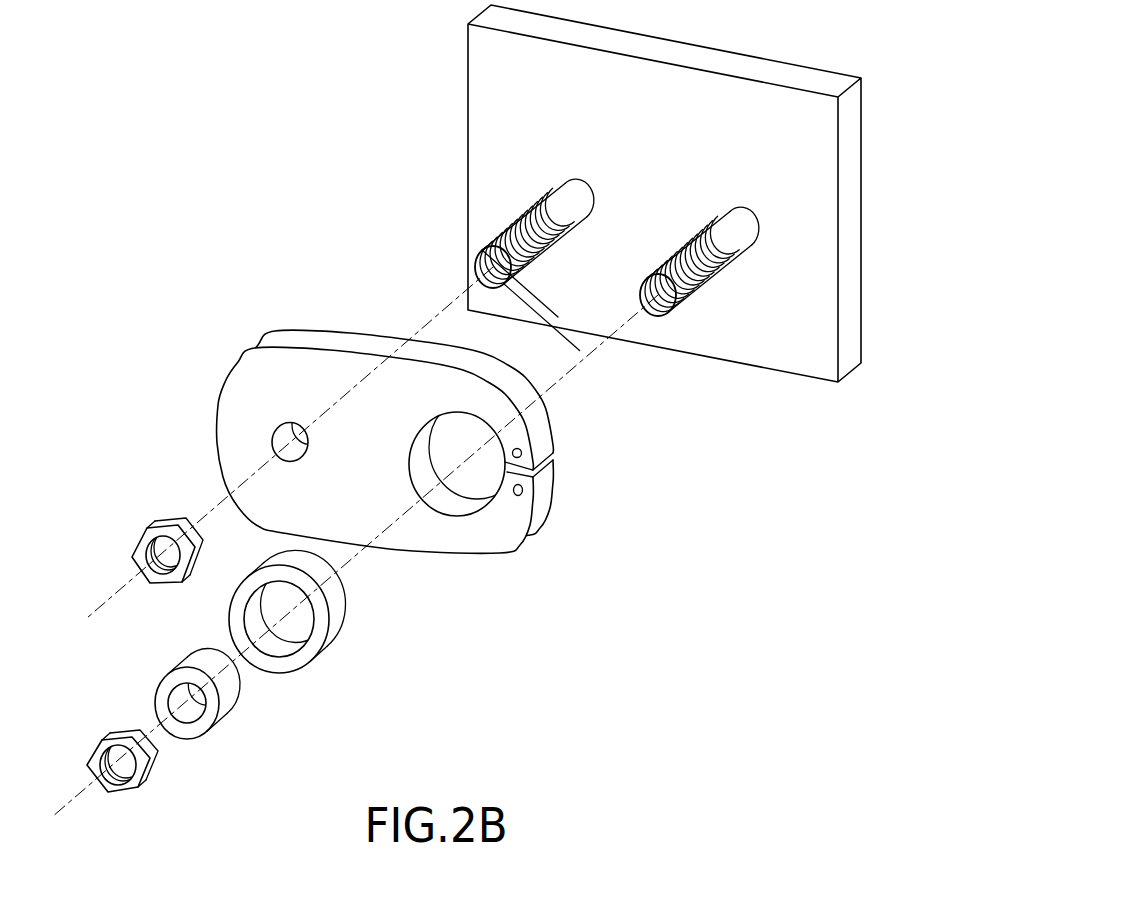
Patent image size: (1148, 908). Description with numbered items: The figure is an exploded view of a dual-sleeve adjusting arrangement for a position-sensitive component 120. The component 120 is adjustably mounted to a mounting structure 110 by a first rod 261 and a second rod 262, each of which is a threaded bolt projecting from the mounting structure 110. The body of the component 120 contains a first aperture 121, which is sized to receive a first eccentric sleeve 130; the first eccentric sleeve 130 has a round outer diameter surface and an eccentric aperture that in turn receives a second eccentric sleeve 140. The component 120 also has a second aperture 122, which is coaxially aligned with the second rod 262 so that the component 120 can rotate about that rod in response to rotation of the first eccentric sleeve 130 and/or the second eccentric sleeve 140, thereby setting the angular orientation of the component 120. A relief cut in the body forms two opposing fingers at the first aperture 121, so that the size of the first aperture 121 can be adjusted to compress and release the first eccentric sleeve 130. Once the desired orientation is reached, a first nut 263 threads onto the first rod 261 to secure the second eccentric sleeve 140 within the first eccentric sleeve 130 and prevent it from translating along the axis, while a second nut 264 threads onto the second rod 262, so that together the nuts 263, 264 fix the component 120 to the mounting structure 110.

The mounting structure 110 is at (828, 125).
The position-sensitive component 120 is at (385, 417).
The first aperture 121 is at (467, 513).
The aperture 122 is at (278, 427).
The first eccentric sleeve 130 is at (330, 603).
The second eccentric sleeve 140 is at (207, 727).
The first rod 261 is at (660, 308).
The second rod 262 is at (487, 260).
The first nut 263 is at (122, 797).
The second nut 264 is at (162, 522).